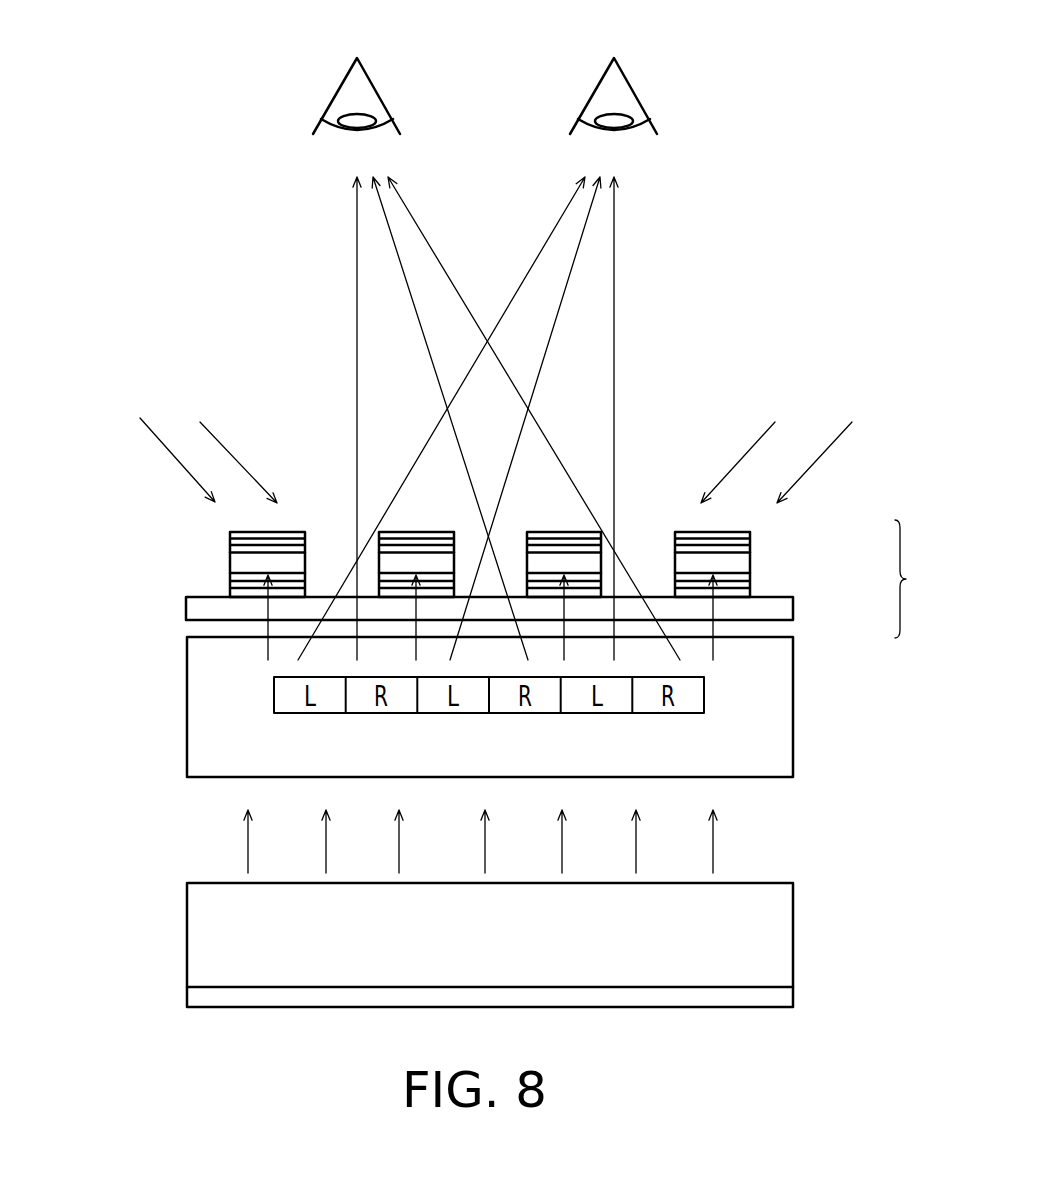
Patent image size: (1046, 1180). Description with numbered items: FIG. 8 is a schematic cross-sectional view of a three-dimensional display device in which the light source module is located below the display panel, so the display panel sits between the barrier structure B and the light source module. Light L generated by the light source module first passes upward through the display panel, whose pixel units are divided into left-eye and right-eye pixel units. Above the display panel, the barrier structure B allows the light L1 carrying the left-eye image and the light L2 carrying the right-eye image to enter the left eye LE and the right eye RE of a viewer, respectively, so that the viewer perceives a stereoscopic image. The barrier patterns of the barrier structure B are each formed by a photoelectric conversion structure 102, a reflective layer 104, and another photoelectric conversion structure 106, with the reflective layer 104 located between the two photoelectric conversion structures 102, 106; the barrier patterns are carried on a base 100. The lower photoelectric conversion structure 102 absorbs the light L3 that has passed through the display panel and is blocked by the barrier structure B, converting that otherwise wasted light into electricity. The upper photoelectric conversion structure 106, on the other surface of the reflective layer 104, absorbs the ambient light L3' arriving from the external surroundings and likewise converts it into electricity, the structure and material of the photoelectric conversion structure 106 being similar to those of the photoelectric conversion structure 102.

The substrate 100 is at (760, 607).
The photoelectric conversion structure 102 is at (745, 588).
The reflective layer 104 is at (742, 563).
The photoelectric conversion structure 106 is at (745, 542).
The barrier structure B is at (911, 579).
The light L is at (713, 851).
The light (left-eye image) L1 is at (350, 570).
The light (right-eye image) L2 is at (357, 342).
The light L3 is at (395, 617).
The ambient light L3' is at (489, 454).
The right eye RE is at (356, 75).
The left eye LE is at (613, 75).